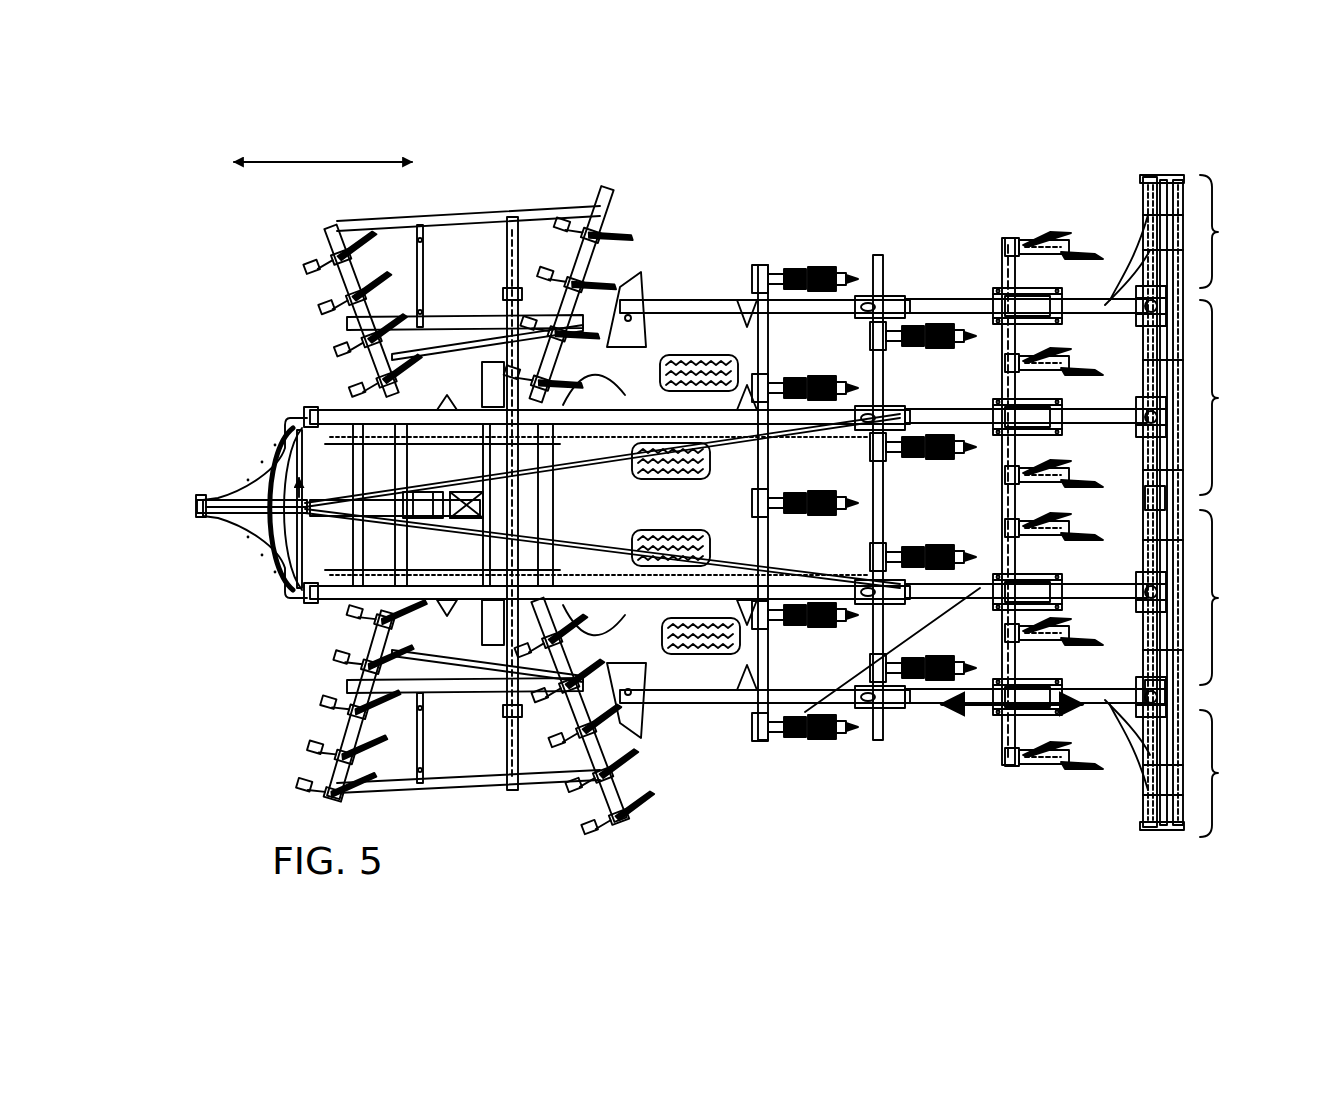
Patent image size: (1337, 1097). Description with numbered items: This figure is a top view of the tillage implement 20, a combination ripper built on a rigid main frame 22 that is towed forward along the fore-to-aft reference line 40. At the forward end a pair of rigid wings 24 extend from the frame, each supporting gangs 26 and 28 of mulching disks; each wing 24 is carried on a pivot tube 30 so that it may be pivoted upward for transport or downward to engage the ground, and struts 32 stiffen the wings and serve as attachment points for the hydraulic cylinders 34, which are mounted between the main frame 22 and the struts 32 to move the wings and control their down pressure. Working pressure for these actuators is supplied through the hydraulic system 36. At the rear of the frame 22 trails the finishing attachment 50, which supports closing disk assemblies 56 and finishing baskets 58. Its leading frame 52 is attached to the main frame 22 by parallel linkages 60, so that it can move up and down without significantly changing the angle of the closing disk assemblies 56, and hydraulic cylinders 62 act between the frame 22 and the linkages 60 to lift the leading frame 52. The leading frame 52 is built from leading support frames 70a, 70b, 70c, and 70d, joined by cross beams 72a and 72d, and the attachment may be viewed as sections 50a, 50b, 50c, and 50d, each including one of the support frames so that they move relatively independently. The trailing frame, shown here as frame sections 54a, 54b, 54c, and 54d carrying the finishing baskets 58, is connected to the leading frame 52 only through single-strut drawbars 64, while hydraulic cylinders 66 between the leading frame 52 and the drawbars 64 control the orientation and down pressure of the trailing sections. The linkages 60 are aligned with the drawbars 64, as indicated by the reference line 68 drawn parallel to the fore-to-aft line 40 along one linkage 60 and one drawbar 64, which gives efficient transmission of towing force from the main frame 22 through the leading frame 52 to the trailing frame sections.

The tillage implement 20 is at (886, 137).
The main frame 22 is at (618, 303).
The rigid wings 24 is at (317, 322).
The gang of mulching disks 26 is at (322, 218).
The gang of mulching disks 28 is at (620, 170).
The pivot tube 30 is at (392, 337).
The strut 32 is at (520, 255).
The hydraulic cylinder 34 is at (505, 296).
The hydraulic system 36 is at (300, 547).
The fore-to-aft reference line 40 is at (350, 160).
The finishing attachment 50 is at (908, 268).
The attachment section 50a is at (1218, 773).
The attachment section 50b is at (1218, 598).
The attachment section 50c is at (1218, 398).
The attachment section 50d is at (1218, 232).
The leading frame 52 is at (986, 256).
The trailing frame section 54a is at (1172, 828).
The trailing frame section 54b is at (1175, 703).
The trailing frame section 54c is at (1180, 499).
The trailing frame section 54d is at (1188, 176).
The closing disk assembly 56 is at (1052, 230).
The finishing basket 58 is at (1150, 163).
The parallel linkage 60 is at (965, 288).
The hydraulic cylinder 62 is at (872, 290).
The single-strut drawbar 64 is at (1103, 256).
The hydraulic cylinder 66 is at (1092, 482).
The reference line 68 is at (972, 712).
The leading support frame 70a is at (995, 722).
The leading support frame 70b is at (1000, 578).
The leading support frame 70c is at (1000, 402).
The leading support frame 70d is at (1030, 293).
The cross beam 72a is at (1020, 682).
The cross beam 72d is at (1020, 400).